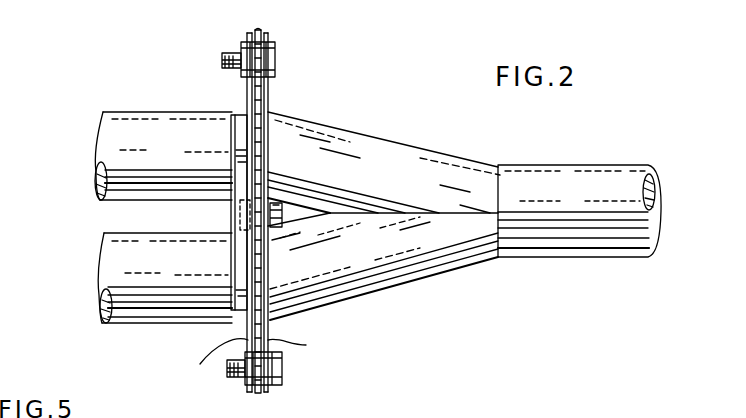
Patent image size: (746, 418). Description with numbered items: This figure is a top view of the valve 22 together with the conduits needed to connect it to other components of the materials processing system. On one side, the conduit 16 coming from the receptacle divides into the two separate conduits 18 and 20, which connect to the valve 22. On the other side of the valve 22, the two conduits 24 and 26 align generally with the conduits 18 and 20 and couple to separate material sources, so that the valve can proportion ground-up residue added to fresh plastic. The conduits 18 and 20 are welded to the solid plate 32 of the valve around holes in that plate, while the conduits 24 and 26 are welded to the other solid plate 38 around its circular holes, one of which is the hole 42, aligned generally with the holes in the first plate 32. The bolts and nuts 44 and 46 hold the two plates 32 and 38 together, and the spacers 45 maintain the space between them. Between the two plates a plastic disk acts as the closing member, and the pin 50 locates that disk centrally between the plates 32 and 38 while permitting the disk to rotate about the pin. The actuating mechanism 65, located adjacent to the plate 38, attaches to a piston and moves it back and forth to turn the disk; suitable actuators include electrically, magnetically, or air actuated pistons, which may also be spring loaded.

The conduit 16 is at (563, 183).
The conduit 18 is at (334, 289).
The conduit 20 is at (307, 140).
The valve 22 is at (276, 393).
The conduit 24 is at (155, 305).
The conduit 26 is at (126, 188).
The solid plate 32 is at (298, 346).
The solid plate 38 is at (207, 358).
The hole 42 is at (262, 396).
The bolts and nuts 44 is at (276, 58).
The spacers 45 is at (263, 31).
The bolts and nuts 46 is at (240, 43).
The pin 50 is at (233, 216).
The actuating mechanism 65 is at (232, 136).